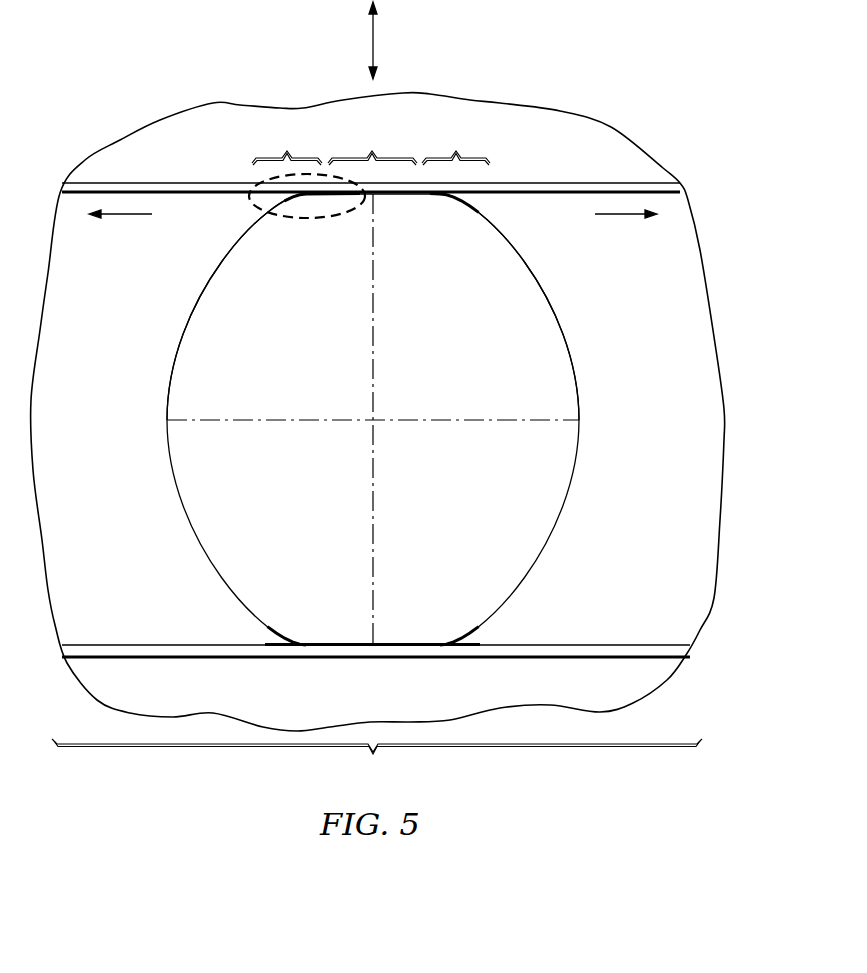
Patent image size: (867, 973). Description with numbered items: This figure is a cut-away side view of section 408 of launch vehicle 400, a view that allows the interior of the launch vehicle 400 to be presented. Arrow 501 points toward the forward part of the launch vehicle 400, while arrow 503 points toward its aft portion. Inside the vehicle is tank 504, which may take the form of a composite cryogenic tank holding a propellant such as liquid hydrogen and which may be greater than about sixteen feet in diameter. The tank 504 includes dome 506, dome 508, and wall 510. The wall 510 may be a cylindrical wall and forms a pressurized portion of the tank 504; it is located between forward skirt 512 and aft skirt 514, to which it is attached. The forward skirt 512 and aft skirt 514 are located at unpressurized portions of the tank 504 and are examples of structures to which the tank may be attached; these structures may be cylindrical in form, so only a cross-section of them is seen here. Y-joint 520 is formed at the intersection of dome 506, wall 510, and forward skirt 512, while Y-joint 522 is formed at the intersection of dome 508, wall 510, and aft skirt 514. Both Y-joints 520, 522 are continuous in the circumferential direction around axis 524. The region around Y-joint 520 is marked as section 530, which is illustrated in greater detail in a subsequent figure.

The launch vehicle 400 is at (197, 65).
The section 408 is at (377, 716).
The tank 504 is at (313, 512).
The dome 506 is at (172, 365).
The dome 508 is at (575, 365).
The wall 510 is at (372, 145).
The forward skirt 512 is at (287, 145).
The aft skirt 514 is at (456, 145).
The Y-joint 520 is at (302, 200).
The Y-joint 522 is at (433, 197).
The section 530 is at (252, 202).
The axis 524 is at (373, 41).
The arrow 501 is at (128, 214).
The arrow 503 is at (618, 214).